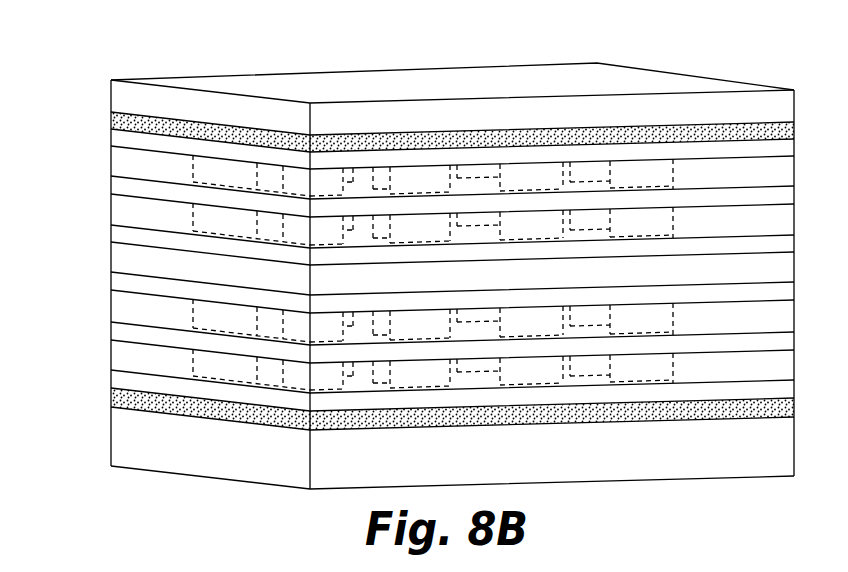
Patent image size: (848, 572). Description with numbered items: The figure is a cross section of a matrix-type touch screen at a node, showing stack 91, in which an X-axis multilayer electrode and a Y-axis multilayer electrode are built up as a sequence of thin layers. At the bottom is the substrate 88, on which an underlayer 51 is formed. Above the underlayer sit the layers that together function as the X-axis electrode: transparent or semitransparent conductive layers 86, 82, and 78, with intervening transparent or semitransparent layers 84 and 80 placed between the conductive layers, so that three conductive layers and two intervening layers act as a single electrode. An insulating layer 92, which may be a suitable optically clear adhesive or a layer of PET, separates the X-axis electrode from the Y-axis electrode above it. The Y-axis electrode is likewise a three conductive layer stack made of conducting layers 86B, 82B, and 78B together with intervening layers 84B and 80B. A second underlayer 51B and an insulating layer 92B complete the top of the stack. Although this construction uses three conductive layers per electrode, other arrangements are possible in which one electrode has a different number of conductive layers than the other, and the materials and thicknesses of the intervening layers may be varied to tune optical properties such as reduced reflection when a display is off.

The stack 91 is at (190, 55).
The insulating layer 92B is at (117, 93).
The underlayer 51B is at (120, 121).
The conducting layer 78B is at (122, 135).
The intervening layer 80B is at (122, 159).
The conducting layer 82B is at (122, 184).
The intervening layer 84B is at (122, 207).
The conducting layer 86B is at (122, 232).
The insulating layer 92 is at (122, 257).
The conductive layer 78 is at (122, 282).
The intervening layer 80 is at (122, 306).
The conductive layer 82 is at (122, 330).
The intervening layer 84 is at (122, 355).
The conductive layer 86 is at (122, 380).
The underlayer 51 is at (118, 397).
The substrate 88 is at (122, 449).